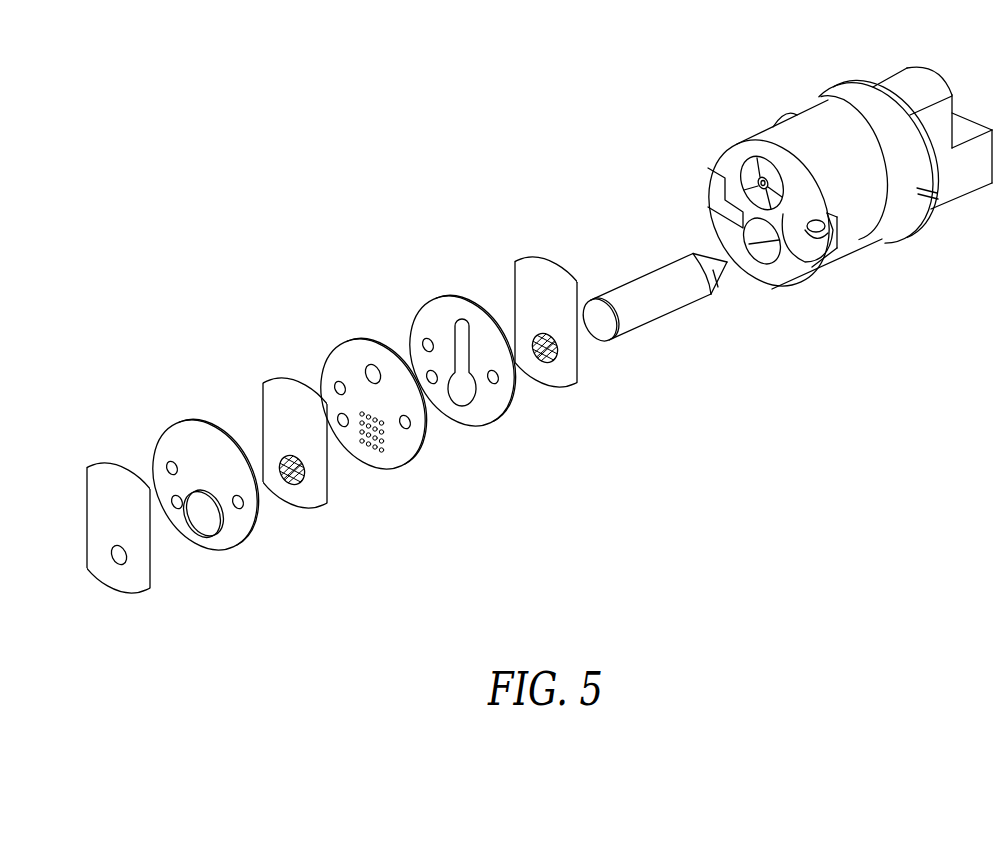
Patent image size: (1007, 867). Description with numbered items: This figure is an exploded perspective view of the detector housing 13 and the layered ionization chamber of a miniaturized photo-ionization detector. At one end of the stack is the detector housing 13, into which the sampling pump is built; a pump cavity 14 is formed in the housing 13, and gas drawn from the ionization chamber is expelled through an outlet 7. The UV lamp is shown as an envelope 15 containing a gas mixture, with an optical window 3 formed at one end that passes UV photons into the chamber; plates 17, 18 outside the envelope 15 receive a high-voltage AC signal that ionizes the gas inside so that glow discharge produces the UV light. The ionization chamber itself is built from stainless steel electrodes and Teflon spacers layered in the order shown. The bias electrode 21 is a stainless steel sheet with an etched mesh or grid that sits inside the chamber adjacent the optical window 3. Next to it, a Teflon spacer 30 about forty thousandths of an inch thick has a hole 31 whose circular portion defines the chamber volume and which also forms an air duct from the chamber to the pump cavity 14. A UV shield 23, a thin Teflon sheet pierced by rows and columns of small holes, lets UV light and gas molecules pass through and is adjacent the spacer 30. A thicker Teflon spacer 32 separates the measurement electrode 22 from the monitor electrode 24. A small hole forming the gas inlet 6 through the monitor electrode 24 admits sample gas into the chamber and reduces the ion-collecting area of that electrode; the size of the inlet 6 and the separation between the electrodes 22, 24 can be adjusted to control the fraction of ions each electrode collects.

The optical window 3 is at (618, 338).
The gas inlet 6 is at (117, 561).
The outlet 7 is at (774, 108).
The detector housing 13 is at (870, 240).
The pump cavity 14 is at (744, 156).
The envelope 15 is at (664, 309).
The plate 17 is at (748, 232).
The plate 18 is at (778, 269).
The bias electrode 21 is at (581, 389).
The measurement electrode 22 is at (329, 506).
The UV shield 23 is at (416, 468).
The monitor electrode 24 is at (150, 590).
The Teflon spacer 30 is at (508, 426).
The hole 31 is at (468, 421).
The Teflon spacer 32 is at (244, 544).